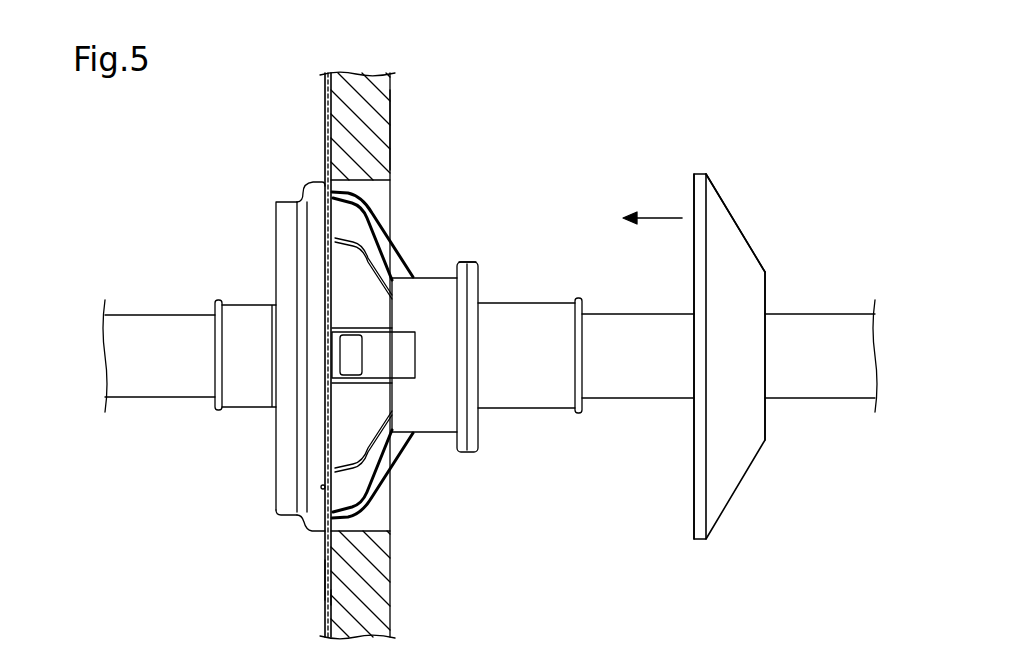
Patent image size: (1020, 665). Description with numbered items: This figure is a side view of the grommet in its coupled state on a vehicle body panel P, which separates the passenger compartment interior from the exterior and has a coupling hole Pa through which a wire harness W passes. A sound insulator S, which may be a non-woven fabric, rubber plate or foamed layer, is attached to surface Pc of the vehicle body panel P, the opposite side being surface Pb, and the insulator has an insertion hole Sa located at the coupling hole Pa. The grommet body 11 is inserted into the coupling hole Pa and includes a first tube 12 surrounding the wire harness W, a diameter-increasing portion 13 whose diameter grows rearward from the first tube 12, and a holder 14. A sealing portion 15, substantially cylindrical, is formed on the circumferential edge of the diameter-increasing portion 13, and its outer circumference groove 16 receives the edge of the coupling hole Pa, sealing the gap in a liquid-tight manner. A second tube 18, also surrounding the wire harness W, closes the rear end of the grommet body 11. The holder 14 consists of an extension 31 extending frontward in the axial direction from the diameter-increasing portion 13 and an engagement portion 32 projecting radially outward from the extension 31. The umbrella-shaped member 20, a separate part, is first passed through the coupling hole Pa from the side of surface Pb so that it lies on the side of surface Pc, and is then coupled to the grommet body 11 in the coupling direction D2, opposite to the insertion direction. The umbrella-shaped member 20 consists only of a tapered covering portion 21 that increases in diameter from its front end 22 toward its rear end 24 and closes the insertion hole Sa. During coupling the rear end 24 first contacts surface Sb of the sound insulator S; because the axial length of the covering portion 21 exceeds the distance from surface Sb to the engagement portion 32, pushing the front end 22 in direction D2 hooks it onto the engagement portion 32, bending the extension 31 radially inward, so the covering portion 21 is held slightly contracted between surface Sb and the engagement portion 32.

The grommet body 11 is at (276, 431).
The first tube 12 is at (527, 312).
The diameter-increasing portion 13 is at (378, 457).
The holder 14 is at (478, 440).
The sealing portion 15 is at (306, 515).
The outer circumference groove 16 is at (321, 486).
The second tube 18 is at (247, 317).
The umbrella-shaped member 20 is at (744, 480).
The covering portion 21 is at (731, 225).
The front end 22 is at (765, 284).
The rear end 24 is at (692, 513).
The extension 31 is at (435, 290).
The engagement portion 32 is at (463, 262).
The vehicle body panel P is at (325, 99).
The coupling hole Pa is at (320, 204).
The surface of the vehicle body panel Pb is at (324, 579).
The surface of the vehicle body panel Pc is at (333, 597).
The sound insulator S is at (386, 95).
The insertion hole Sa is at (372, 184).
The surface of the sound insulator Sb is at (392, 123).
The wire harness W is at (818, 398).
The coupling direction D2 is at (652, 204).